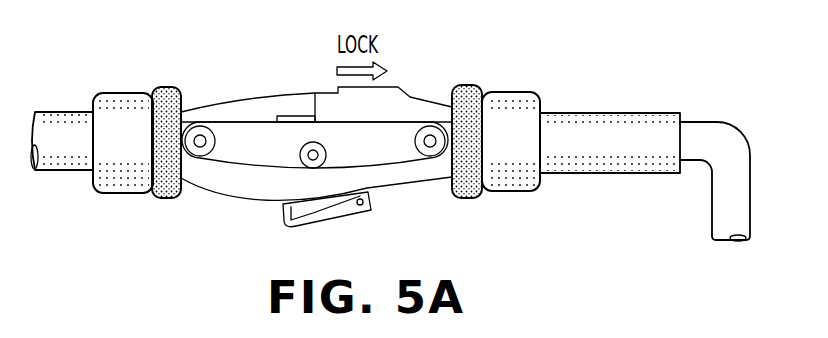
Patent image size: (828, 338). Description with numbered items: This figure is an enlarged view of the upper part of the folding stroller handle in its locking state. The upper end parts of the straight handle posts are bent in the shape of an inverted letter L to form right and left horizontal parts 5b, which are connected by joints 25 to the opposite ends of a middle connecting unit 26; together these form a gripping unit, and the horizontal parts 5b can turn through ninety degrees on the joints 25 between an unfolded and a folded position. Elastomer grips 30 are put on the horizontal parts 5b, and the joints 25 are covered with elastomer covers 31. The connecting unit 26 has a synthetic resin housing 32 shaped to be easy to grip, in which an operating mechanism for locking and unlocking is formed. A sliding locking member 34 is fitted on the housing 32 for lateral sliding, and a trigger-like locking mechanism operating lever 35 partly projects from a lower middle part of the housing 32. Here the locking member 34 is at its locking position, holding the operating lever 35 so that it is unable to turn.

The grip 30 is at (60, 120).
The cover 31 is at (122, 115).
The joint 25 is at (146, 139).
The middle connecting unit 26 is at (265, 93).
The locking member 34 is at (427, 112).
The housing 32 is at (237, 180).
The locking mechanism operating lever 35 is at (370, 207).
The horizontal part 5b is at (698, 130).